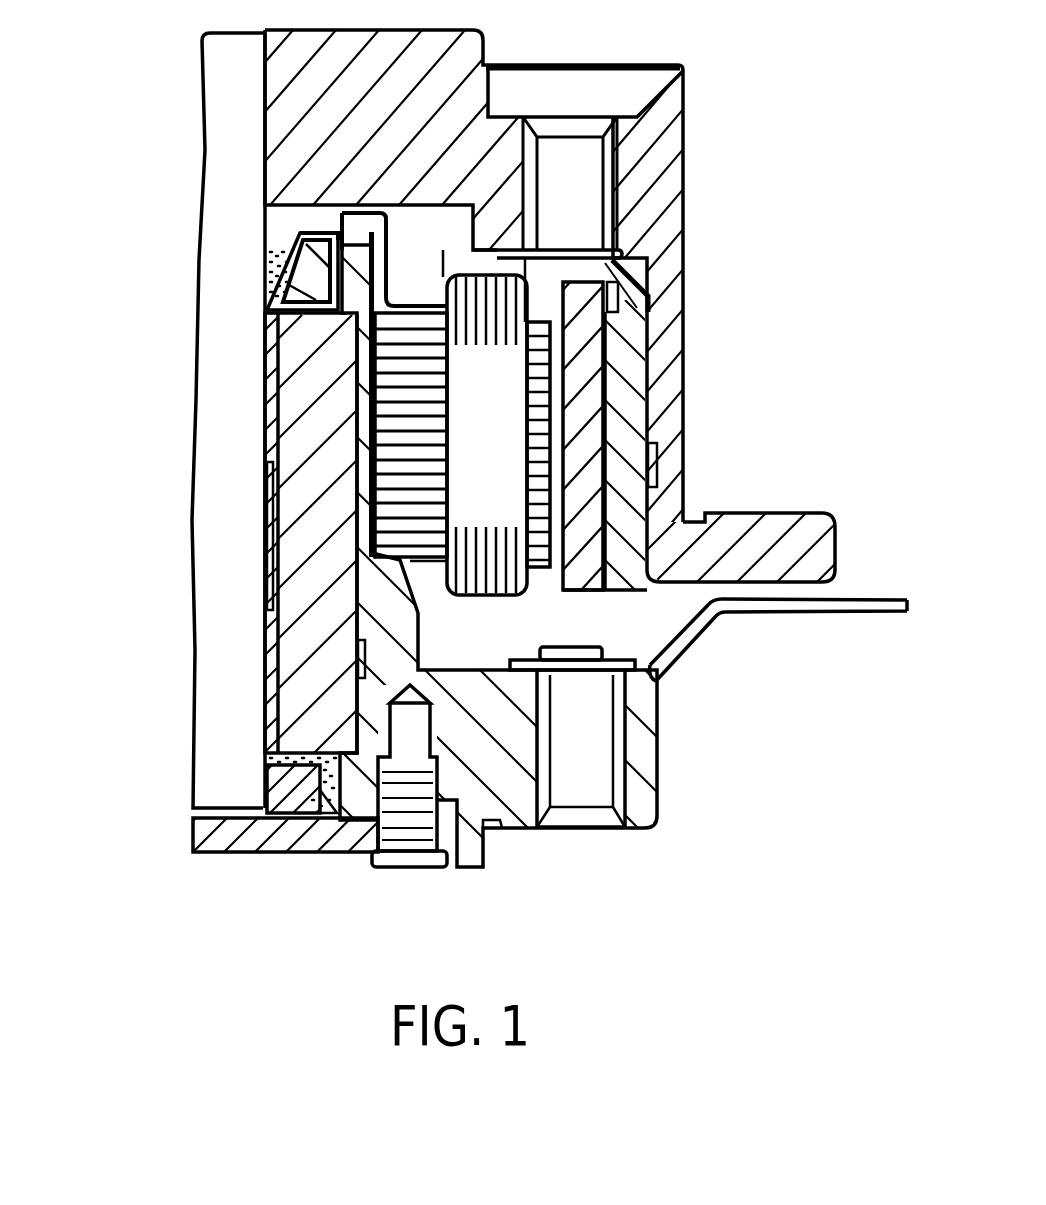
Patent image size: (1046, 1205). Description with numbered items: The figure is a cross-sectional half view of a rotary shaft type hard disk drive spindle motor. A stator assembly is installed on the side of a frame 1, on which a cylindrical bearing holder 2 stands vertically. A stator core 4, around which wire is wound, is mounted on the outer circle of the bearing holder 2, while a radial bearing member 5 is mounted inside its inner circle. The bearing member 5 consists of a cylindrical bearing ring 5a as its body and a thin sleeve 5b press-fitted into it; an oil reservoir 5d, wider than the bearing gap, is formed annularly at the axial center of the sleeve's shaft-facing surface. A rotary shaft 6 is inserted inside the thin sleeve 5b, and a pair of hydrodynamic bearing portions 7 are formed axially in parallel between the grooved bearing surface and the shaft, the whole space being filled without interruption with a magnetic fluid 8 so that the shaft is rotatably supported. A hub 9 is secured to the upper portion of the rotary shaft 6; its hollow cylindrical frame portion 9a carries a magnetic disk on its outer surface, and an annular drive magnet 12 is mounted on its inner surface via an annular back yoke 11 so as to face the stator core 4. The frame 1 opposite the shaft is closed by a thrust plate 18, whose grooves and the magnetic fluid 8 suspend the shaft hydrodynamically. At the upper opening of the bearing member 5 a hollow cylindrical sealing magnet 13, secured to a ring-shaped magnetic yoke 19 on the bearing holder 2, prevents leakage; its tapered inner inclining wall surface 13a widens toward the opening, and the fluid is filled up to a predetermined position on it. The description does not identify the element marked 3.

The frame 1 is at (512, 800).
The cylindrical bearing holder 2 is at (402, 645).
The magnet 3 is at (470, 595).
The stator core 4 is at (543, 422).
The radial bearing member 5 is at (240, 487).
The cylindrical bearing ring 5a is at (265, 517).
The thin sleeve 5b is at (265, 435).
The oil reservoir 5d is at (265, 555).
The rotary shaft 6 is at (223, 370).
The hydrodynamic bearing portions 7 is at (265, 405).
The magnetic fluid 8 is at (265, 285).
The hub 9 is at (690, 62).
The hollow cylindrical frame portion 9a is at (655, 170).
The annular back yoke 11 is at (620, 517).
The annular drive magnet 12 is at (583, 330).
The hollow cylindrical sealing magnet 13 is at (275, 268).
The inclining wall surface 13a is at (297, 233).
The thrust plate 18 is at (265, 832).
The ring-shaped magnetic yoke 19 is at (373, 287).